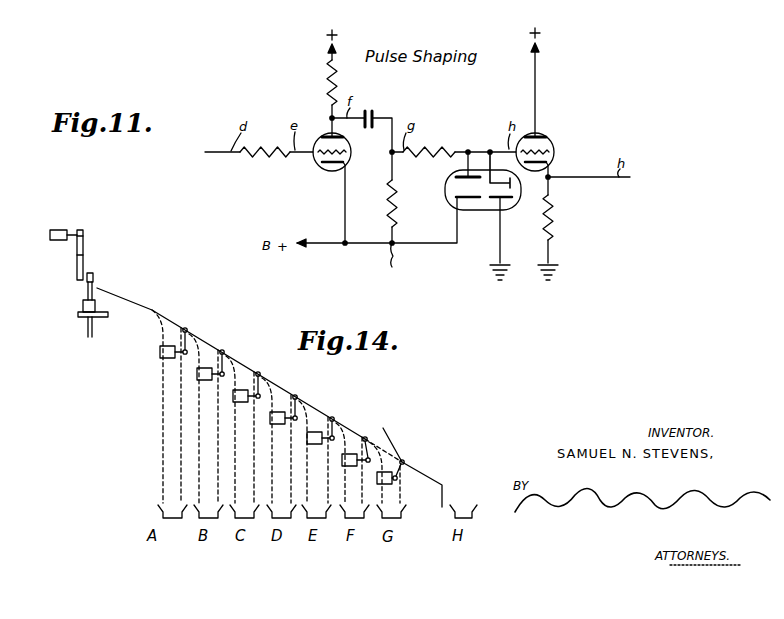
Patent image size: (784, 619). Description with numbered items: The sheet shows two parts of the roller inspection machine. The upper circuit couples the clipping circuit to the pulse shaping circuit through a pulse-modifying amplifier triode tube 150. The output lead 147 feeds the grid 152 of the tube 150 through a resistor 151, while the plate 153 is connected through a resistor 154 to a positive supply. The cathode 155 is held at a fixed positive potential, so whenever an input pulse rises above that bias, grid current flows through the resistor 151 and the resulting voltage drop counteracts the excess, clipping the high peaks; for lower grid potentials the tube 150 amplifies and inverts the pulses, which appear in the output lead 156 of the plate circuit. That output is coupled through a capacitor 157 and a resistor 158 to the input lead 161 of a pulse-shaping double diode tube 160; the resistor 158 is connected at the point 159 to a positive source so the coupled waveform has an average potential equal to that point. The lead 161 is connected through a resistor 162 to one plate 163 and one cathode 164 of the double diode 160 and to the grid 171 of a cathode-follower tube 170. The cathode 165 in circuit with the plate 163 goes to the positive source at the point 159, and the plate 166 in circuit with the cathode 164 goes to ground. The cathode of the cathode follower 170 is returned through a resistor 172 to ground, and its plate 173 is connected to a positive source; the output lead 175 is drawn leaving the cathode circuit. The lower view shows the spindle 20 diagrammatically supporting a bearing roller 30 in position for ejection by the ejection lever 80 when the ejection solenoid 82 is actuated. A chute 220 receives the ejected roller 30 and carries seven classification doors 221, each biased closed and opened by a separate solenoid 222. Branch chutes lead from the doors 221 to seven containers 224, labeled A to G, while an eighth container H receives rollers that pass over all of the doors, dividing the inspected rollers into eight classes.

In FIG. 11, the output lead 147 is at (209, 152).
In FIG. 11, the resistor 151 is at (269, 160).
In FIG. 11, the pulse-modifying amplifier triode tube 150 is at (337, 187).
In FIG. 11, the grid 152 is at (350, 151).
In FIG. 11, the plate 153 is at (347, 141).
In FIG. 11, the resistor 154 is at (330, 80).
In FIG. 11, the cathode 155 is at (350, 165).
In FIG. 11, the output lead 156 is at (366, 110).
In FIG. 11, the capacitor 157 is at (375, 113).
In FIG. 11, the resistor 158 is at (391, 202).
In FIG. 11, the positive voltage source connection point 159 is at (394, 266).
In FIG. 11, the pulse-shaping double diode tube 160 is at (479, 149).
In FIG. 11, the input lead 161 is at (433, 150).
In FIG. 11, the resistor 162 is at (456, 148).
In FIG. 11, the plate 163 is at (475, 216).
In FIG. 11, the cathode 164 is at (521, 192).
In FIG. 11, the cathode 165 is at (453, 204).
In FIG. 11, the plate 166 is at (489, 238).
In FIG. 11, the cathode-follower tube 170 is at (553, 162).
In FIG. 11, the grid 171 is at (553, 149).
In FIG. 11, the resistor 172 is at (557, 225).
In FIG. 11, the plate 173 is at (552, 138).
In FIG. 11, the output lead 175 is at (598, 179).
In FIG. 14, the ejection solenoid 82 is at (58, 230).
In FIG. 14, the ejection lever 80 is at (85, 248).
In FIG. 14, the bearing roller 30 is at (95, 276).
In FIG. 14, the spindle 20 is at (87, 327).
In FIG. 14, the chute 220 is at (132, 303).
In FIG. 14, the classification door 221 is at (212, 342).
In FIG. 14, the solenoid 222 is at (160, 358).
In FIG. 14, the container 224 is at (173, 526).